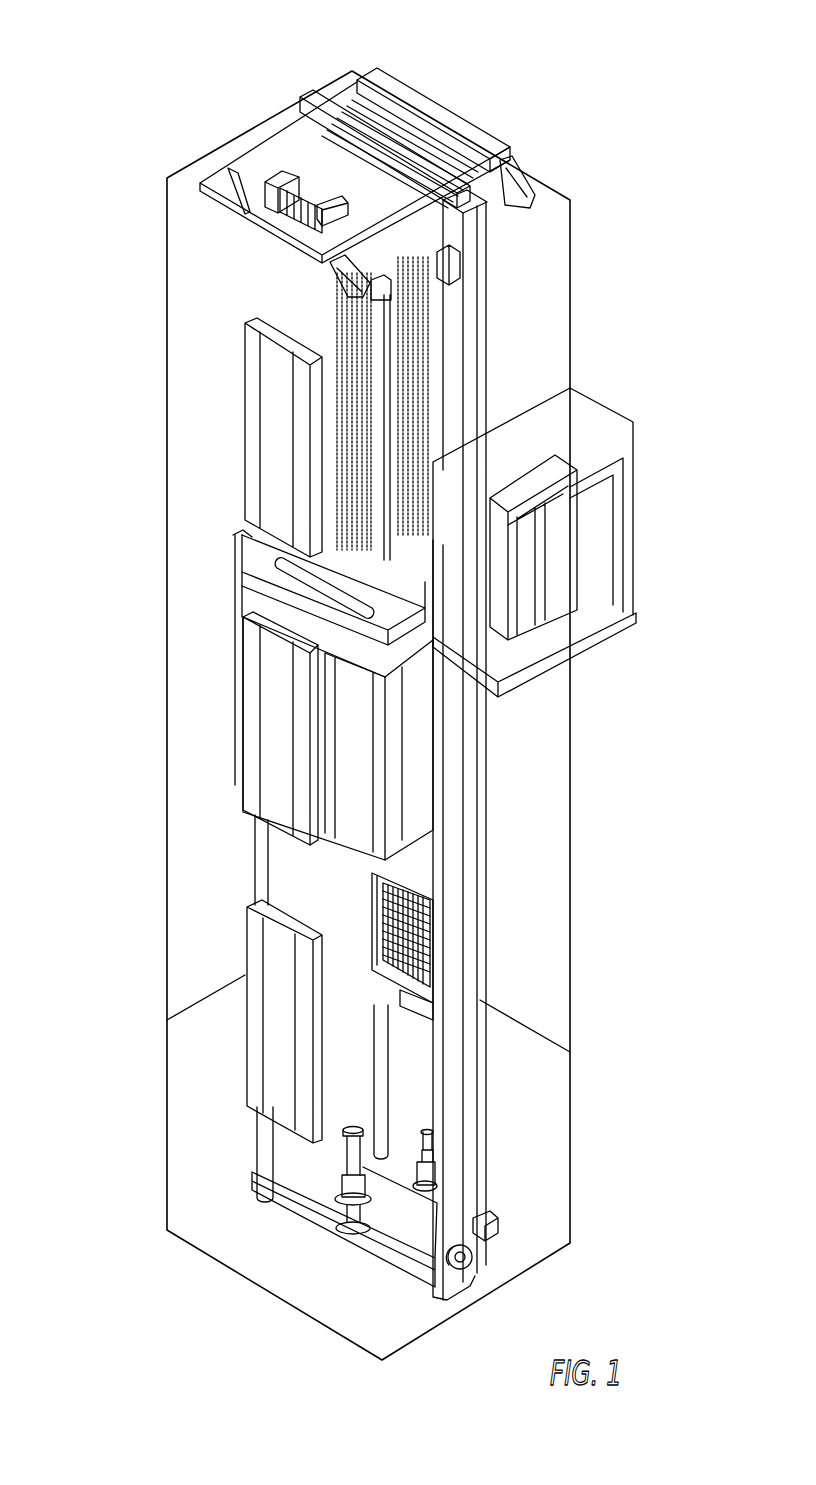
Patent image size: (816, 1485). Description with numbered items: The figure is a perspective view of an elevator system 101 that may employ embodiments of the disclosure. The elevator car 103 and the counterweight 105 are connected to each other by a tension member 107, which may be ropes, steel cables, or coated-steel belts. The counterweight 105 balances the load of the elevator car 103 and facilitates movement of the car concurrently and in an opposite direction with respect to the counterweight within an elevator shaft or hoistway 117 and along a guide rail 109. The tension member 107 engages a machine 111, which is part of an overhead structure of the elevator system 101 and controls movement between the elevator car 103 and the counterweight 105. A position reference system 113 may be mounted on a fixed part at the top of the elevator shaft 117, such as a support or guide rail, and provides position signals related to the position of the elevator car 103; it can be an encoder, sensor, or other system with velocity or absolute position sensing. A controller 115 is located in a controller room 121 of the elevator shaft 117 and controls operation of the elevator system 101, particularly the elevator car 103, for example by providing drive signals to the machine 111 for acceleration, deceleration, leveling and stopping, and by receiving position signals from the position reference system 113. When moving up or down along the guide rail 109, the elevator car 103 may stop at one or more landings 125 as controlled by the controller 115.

The elevator system 101 is at (594, 97).
The elevator car 103 is at (367, 755).
The counterweight 105 is at (420, 957).
The tension member 107 is at (368, 430).
The guide rail 109 is at (462, 878).
The machine 111 is at (283, 183).
The position reference system 113 is at (457, 267).
The controller 115 is at (572, 557).
The elevator shaft or hoistway 117 is at (228, 878).
The controller room 121 is at (636, 422).
The landings 125 is at (242, 428).